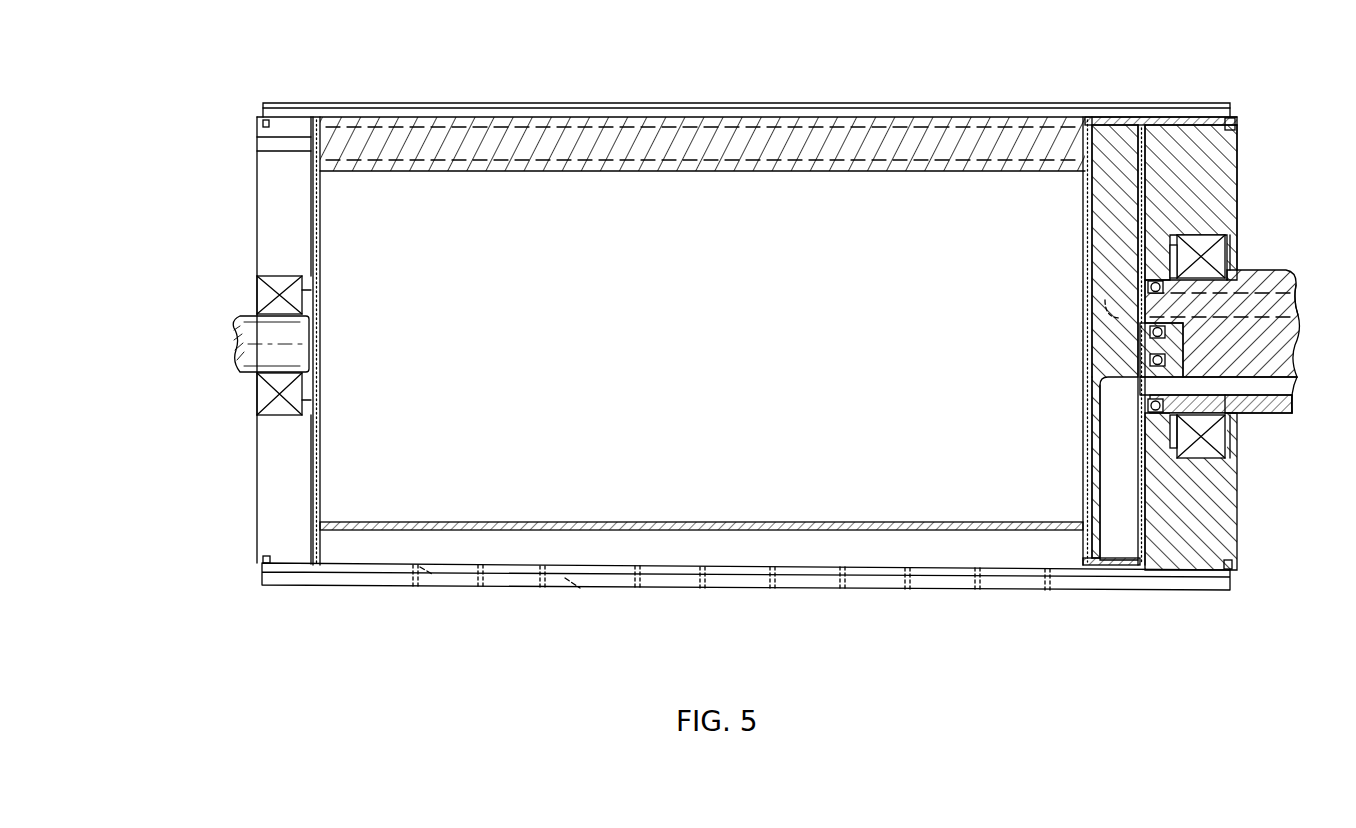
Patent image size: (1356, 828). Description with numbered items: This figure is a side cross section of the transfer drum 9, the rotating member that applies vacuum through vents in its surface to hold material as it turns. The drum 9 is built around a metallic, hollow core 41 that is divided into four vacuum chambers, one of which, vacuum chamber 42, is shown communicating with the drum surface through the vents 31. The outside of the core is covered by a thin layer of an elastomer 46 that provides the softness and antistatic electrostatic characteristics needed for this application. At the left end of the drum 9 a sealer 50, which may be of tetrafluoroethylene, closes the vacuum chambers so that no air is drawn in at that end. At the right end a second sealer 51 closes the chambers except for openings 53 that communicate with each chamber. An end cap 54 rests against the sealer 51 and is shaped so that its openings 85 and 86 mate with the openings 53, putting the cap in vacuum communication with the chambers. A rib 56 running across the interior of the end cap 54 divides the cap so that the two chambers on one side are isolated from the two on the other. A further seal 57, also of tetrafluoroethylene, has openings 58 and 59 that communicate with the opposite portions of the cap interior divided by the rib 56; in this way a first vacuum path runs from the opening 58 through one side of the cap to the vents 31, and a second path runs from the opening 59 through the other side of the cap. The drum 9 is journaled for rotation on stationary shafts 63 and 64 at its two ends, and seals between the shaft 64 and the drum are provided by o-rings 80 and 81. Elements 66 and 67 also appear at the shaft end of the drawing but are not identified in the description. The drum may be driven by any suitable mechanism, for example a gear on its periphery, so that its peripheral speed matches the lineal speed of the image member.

The transfer drum 9 is at (786, 80).
The vents 31 is at (457, 591).
The hollow core 41 is at (876, 137).
The vacuum chamber 42 is at (915, 548).
The elastomer layer 46 is at (982, 110).
The sealer 50 is at (318, 540).
The sealer 51 is at (1083, 500).
The openings 53 is at (1088, 548).
The end cap 54 is at (1131, 205).
The rib 56 is at (1128, 210).
The seal 57 is at (1152, 546).
The opening 58 is at (1227, 415).
The opening 59 is at (1143, 305).
The stationary shaft 63 is at (254, 330).
The stationary shaft 64 is at (1290, 413).
The sleeve 66 is at (1283, 388).
The shaft extension 67 is at (1300, 296).
The o-ring 80 is at (1147, 390).
The o-ring 81 is at (1282, 347).
The opening 85 is at (1097, 543).
The opening 86 is at (1106, 185).